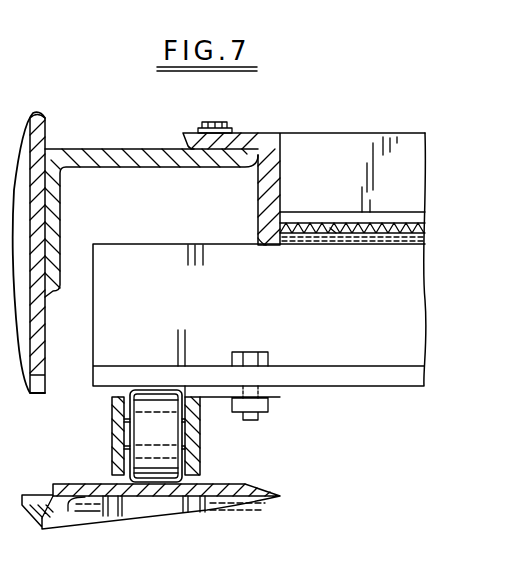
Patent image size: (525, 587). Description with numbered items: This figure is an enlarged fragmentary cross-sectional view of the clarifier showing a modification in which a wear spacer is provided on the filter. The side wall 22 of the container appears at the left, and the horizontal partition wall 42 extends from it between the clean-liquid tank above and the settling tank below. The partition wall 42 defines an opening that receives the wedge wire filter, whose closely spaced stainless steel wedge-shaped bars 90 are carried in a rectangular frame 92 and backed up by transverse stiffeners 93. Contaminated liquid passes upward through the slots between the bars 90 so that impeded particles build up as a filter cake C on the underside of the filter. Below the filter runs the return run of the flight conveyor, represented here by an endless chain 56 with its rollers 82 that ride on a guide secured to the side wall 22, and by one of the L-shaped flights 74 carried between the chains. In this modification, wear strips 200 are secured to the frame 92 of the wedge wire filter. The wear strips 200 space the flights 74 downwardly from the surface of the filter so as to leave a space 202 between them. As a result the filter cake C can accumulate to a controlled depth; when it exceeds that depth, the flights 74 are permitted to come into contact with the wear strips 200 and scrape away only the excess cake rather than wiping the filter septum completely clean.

The side wall 22 is at (40, 134).
The horizontal partition wall 42 is at (126, 152).
The rectangular frame 92 is at (262, 143).
The wear strips 200 is at (263, 243).
The L-shaped blades or flights 74 is at (408, 320).
The transverse stiffeners 93 is at (415, 218).
The wedge-shaped bars 90 is at (329, 224).
The space 202 is at (417, 242).
The filter cake C is at (378, 238).
The endless chain 56 is at (110, 432).
The rollers 82 is at (164, 439).